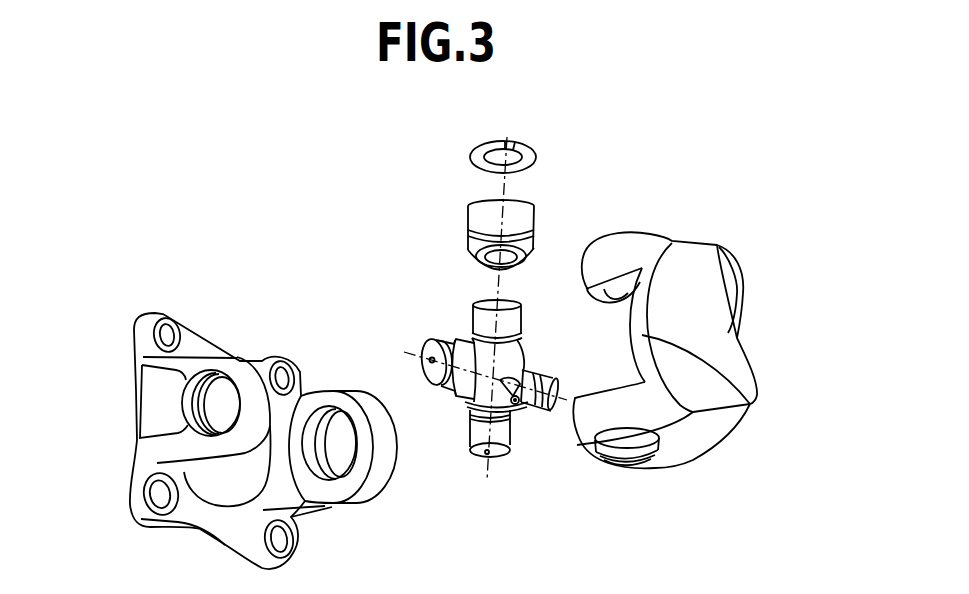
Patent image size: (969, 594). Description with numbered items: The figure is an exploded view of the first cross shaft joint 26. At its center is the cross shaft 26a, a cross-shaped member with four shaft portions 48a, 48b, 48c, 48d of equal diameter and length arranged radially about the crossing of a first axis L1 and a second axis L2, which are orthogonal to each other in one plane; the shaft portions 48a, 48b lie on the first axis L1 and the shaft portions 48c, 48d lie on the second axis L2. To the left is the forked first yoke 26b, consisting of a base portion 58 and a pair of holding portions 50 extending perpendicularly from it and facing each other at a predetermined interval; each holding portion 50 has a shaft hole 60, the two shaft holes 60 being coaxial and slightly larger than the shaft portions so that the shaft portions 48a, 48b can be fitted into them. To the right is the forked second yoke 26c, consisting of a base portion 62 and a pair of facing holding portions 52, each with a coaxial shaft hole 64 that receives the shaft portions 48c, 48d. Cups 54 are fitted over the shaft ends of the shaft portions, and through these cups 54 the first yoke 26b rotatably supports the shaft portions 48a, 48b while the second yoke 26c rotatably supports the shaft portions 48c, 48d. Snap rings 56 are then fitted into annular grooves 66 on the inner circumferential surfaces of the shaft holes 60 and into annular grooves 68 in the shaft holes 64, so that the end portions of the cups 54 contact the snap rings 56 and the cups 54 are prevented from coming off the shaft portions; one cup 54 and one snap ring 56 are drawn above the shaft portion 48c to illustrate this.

The first cross shaft joint 26 is at (318, 155).
The cross shaft 26a is at (517, 463).
The first yoke 26b is at (233, 318).
The second yoke 26c is at (730, 196).
The shaft portion 48a is at (458, 350).
The shaft portion 48b is at (551, 382).
The shaft portion 48c is at (477, 311).
The shaft portion 48d is at (474, 432).
The holding portions 50 is at (233, 370).
The holding portions 52 is at (613, 258).
The cups 54 is at (478, 224).
The snap rings 56 is at (496, 141).
The base portion 58 is at (193, 507).
The shaft hole 60 is at (168, 413).
The base portion 62 is at (742, 403).
The shaft hole 64 is at (606, 308).
The annular groove 66 is at (190, 390).
The annular groove 68 is at (618, 458).
The first axis L1 is at (408, 356).
The second axis L2 is at (481, 478).